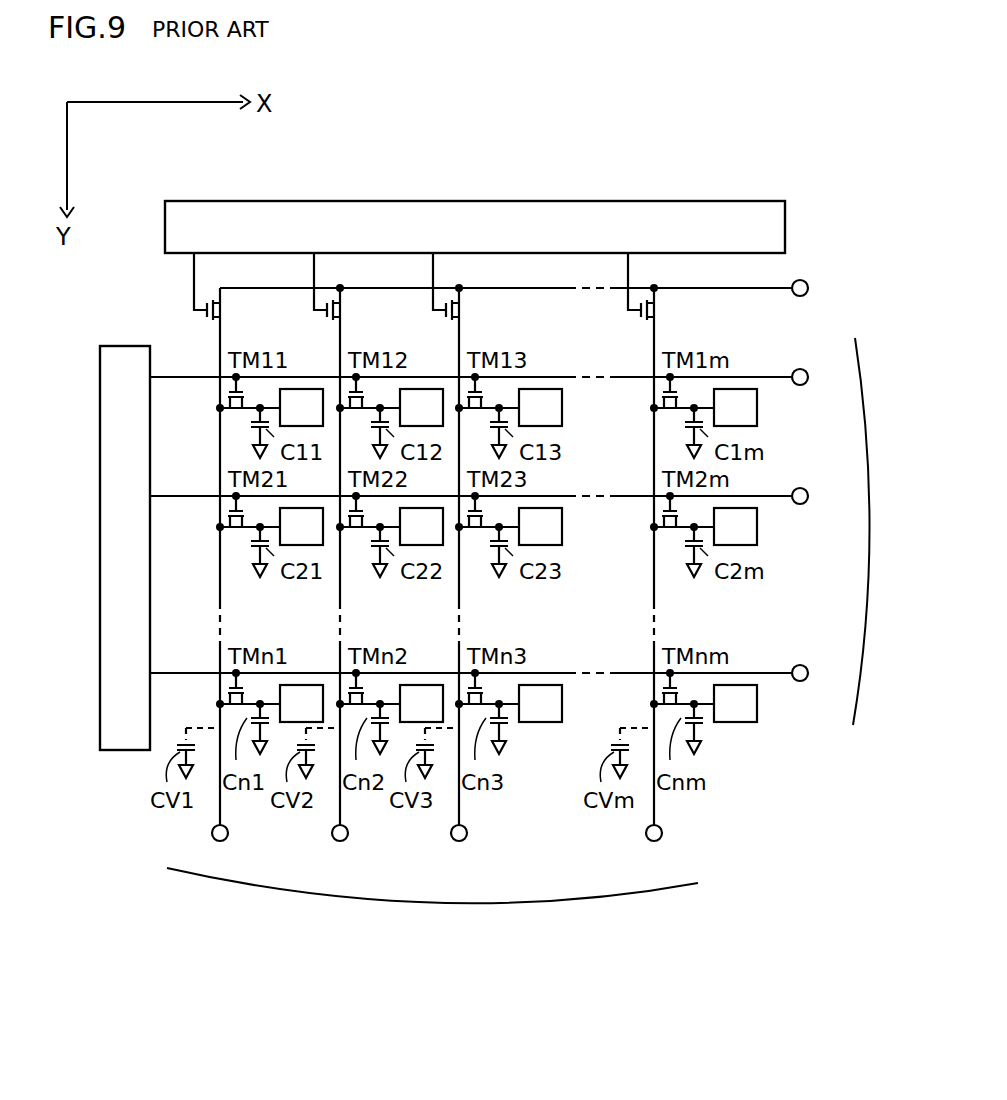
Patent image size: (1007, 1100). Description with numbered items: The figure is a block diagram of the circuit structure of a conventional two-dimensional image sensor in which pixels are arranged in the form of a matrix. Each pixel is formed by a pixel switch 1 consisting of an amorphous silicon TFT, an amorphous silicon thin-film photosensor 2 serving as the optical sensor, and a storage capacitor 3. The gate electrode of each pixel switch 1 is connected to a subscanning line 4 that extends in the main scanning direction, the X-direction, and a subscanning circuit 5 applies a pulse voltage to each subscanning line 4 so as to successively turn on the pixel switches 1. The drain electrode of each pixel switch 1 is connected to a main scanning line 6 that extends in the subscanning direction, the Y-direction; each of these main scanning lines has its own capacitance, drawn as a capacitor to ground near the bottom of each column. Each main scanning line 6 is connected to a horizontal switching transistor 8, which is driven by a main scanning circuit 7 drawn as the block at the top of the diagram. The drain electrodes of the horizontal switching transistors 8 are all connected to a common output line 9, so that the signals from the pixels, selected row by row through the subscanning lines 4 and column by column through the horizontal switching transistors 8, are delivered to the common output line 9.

The pixel switch 1 is at (213, 378).
The amorphous silicon thin-film photosensor 2 is at (280, 531).
The storage capacitor 3 is at (247, 424).
The subscanning line 4 is at (863, 690).
The subscanning circuit 5 is at (118, 672).
The main scanning line 6 is at (460, 905).
The main scanning circuit 7 is at (502, 220).
The horizontal switching transistor 8 is at (212, 292).
The common output line 9 is at (810, 290).